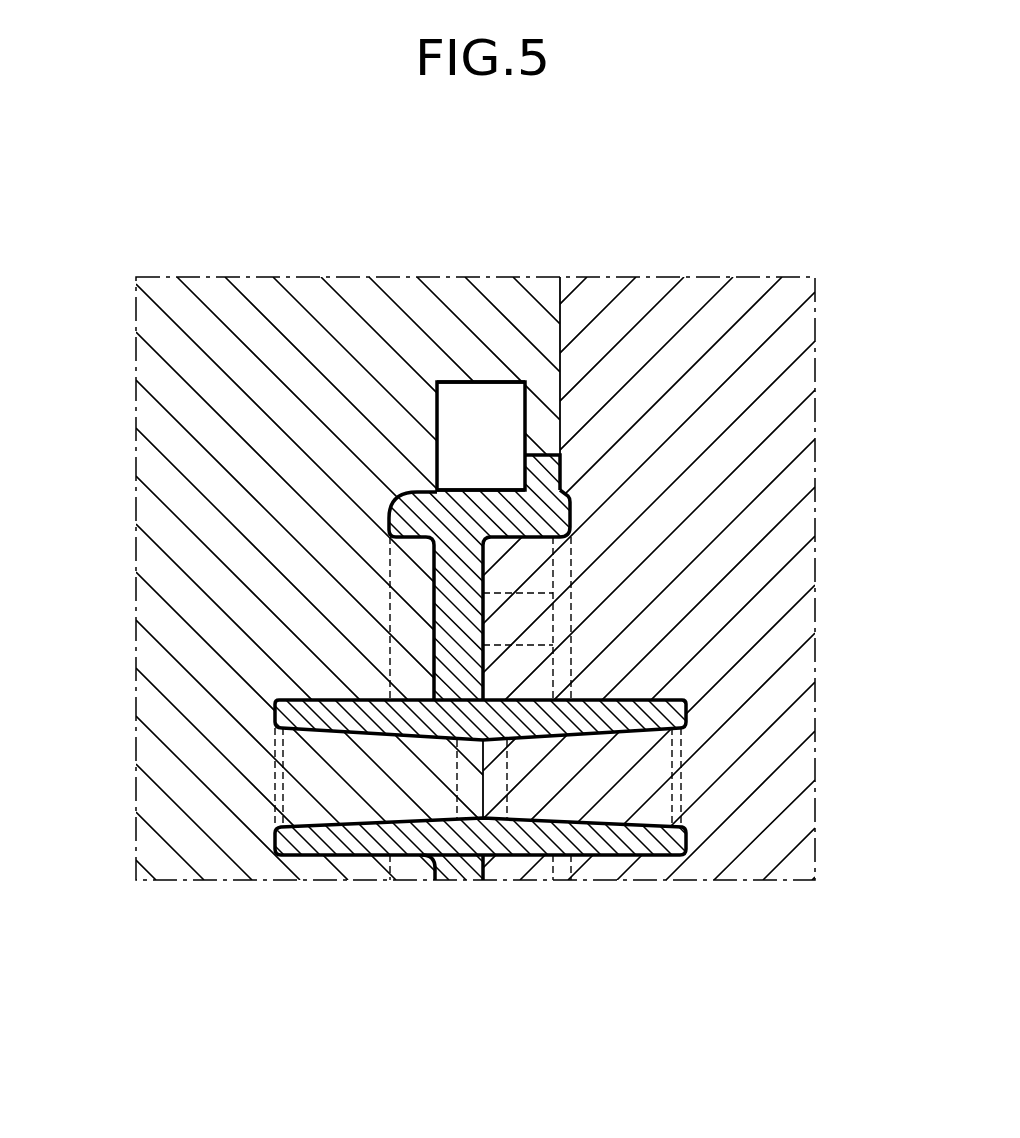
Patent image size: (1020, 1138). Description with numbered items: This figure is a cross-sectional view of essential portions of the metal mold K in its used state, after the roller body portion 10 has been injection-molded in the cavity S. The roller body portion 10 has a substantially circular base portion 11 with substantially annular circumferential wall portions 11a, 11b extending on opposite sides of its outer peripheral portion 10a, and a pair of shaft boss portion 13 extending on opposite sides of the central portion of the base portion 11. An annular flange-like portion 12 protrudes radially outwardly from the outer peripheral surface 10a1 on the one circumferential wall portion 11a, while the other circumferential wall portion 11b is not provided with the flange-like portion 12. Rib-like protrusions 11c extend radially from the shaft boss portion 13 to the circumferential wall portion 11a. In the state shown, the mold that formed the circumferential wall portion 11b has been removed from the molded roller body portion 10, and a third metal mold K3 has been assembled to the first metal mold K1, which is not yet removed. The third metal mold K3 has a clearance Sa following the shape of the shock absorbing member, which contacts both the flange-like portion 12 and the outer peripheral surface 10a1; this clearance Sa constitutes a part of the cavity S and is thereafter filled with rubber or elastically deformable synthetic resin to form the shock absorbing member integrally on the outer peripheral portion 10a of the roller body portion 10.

The metal mold K is at (450, 907).
The first metal mold K1 is at (738, 845).
The third metal mold K3 is at (250, 845).
The flange-like portion 12 is at (562, 455).
The circumferential wall portion 11b is at (393, 492).
The cavity S is at (437, 382).
The clearance Sa is at (455, 407).
The outer peripheral portion 10a is at (492, 490).
The outer peripheral surface 10a1 is at (553, 462).
The circumferential wall portion 11a is at (567, 522).
The rib-like protrusions 11c is at (553, 573).
The base portion 11 is at (483, 653).
The roller body portion 10 is at (460, 620).
The shaft boss portion 13 is at (665, 718).